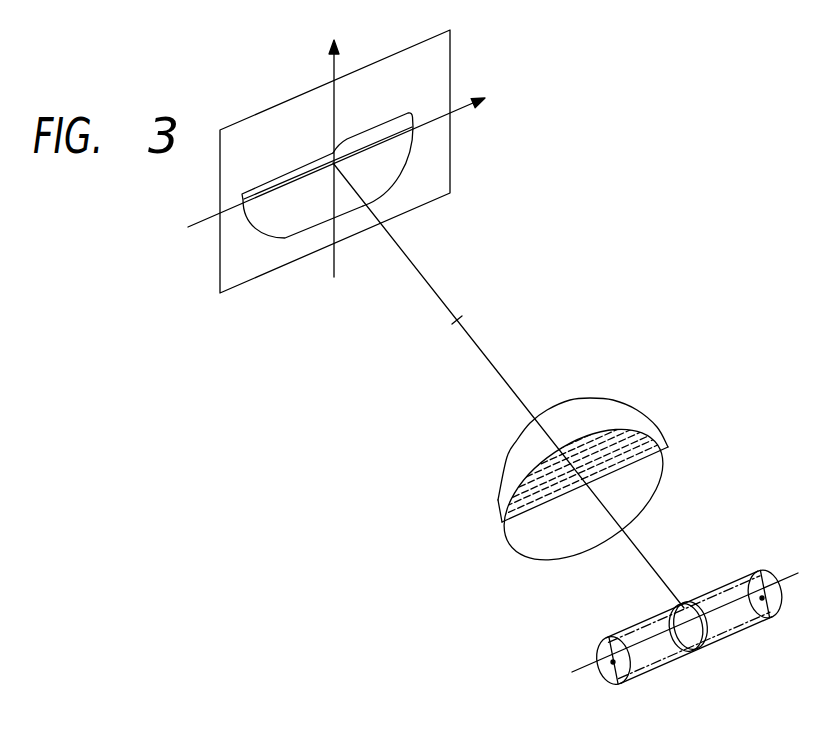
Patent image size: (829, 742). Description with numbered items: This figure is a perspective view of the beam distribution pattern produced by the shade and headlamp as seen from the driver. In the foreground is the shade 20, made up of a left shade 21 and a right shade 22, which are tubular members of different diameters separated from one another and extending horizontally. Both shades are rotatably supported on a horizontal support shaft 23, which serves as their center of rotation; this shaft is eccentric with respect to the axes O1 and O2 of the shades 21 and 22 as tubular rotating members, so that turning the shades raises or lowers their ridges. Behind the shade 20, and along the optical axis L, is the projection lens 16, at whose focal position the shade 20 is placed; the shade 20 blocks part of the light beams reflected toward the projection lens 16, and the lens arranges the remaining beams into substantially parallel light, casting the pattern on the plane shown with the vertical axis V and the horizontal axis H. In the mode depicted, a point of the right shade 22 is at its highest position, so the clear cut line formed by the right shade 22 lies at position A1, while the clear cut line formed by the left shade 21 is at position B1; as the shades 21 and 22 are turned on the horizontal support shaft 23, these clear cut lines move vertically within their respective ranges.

The projection lens 16 is at (657, 473).
The shade 20 is at (676, 597).
The left shade 21 is at (655, 615).
The right shade 22 is at (730, 590).
The horizontal support shaft 23 is at (596, 658).
The clear cut line position A1 is at (303, 166).
The clear cut line position B1 is at (383, 123).
The optical axis L is at (494, 365).
The vertical axis V is at (334, 144).
The horizontal axis H is at (347, 156).
The axis of the left shade O1 is at (612, 663).
The axis of the right shade O2 is at (774, 639).